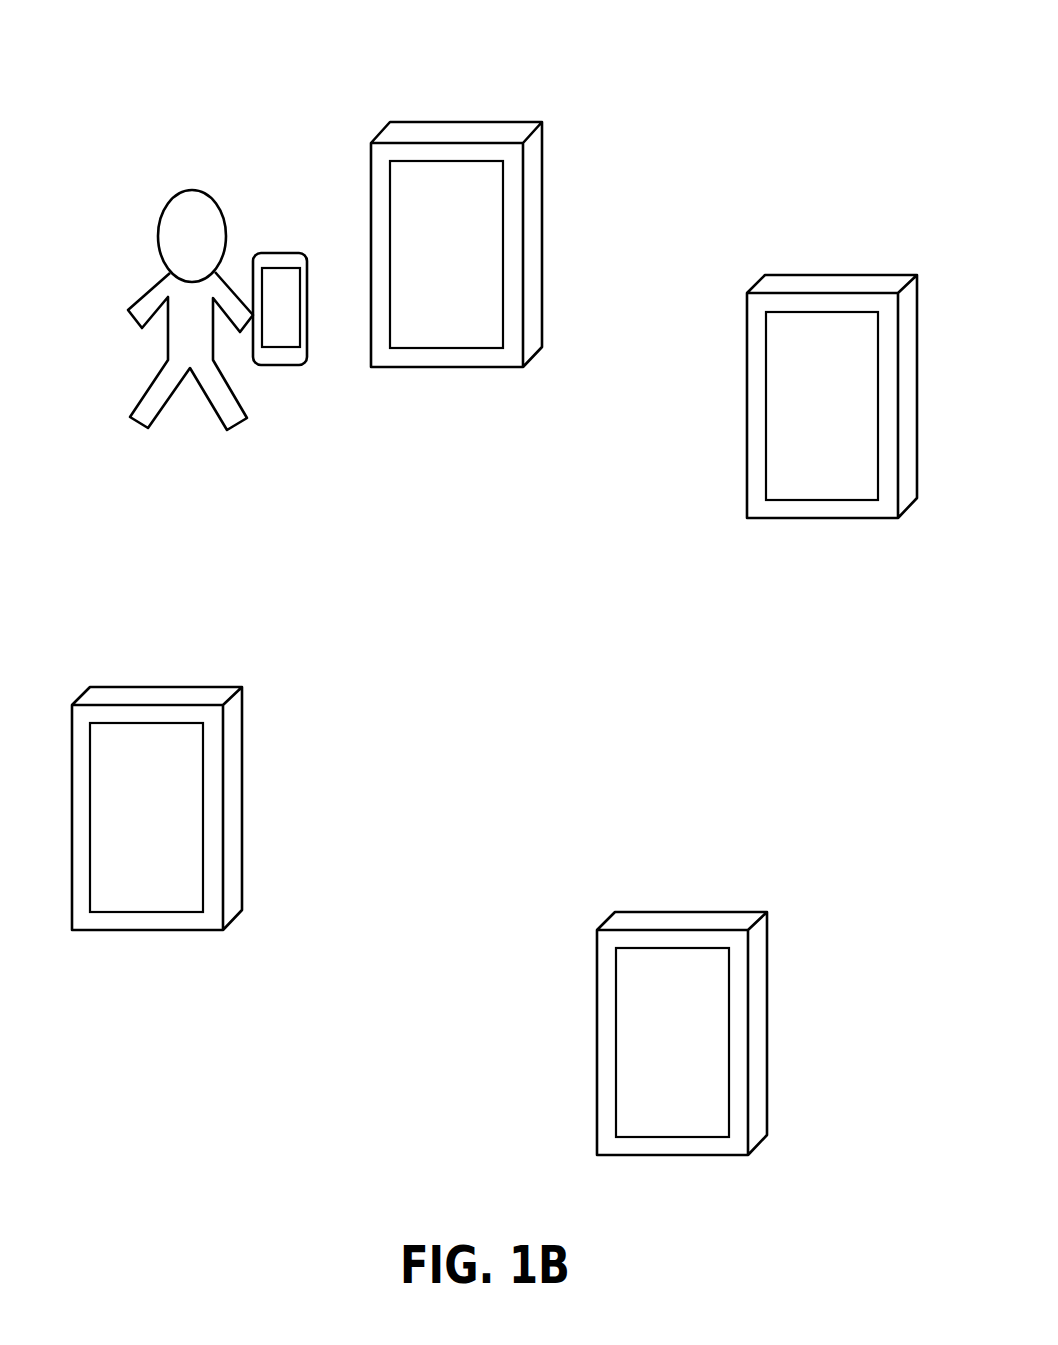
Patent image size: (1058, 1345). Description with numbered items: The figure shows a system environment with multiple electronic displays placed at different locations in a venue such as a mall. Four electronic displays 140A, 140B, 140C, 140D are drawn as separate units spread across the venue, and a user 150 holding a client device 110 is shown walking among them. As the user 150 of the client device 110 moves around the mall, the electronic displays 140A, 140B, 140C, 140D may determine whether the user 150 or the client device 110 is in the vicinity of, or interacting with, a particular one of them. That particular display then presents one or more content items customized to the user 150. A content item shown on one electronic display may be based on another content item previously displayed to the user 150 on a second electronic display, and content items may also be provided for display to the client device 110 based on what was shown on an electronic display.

The user 150 is at (122, 212).
The client device 110 is at (261, 220).
The electronic display 140A is at (493, 56).
The electronic display 140B is at (869, 216).
The electronic display 140C is at (185, 631).
The electronic display 140D is at (738, 854).